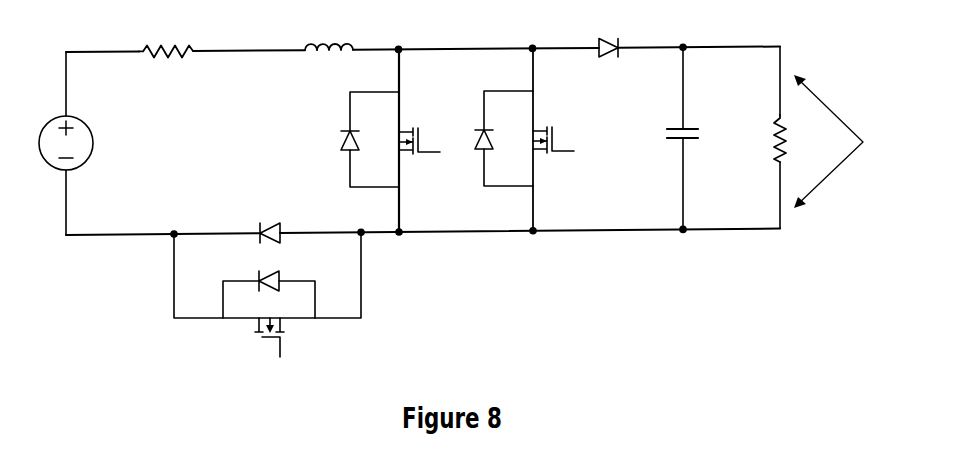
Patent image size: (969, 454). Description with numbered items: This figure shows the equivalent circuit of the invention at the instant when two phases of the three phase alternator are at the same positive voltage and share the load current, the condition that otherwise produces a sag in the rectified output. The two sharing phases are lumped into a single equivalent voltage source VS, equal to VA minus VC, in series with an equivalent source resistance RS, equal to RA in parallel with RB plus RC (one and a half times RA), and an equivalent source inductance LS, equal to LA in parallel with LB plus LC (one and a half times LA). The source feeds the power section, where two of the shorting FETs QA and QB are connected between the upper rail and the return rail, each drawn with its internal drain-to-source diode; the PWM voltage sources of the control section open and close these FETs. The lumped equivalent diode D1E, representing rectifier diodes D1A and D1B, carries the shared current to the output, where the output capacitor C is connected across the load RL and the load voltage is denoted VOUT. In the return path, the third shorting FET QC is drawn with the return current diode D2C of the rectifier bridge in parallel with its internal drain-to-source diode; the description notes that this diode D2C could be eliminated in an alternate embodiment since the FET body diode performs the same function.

The equivalent source voltage VS is at (82, 143).
The equivalent source resistance RS is at (166, 36).
The equivalent source inductance LS is at (329, 32).
The shorting FET QA is at (395, 141).
The shorting FET QB is at (528, 140).
The lumped equivalent diode D1E is at (617, 34).
The output capacitor C is at (693, 138).
The load RL is at (795, 138).
The output voltage VOUT is at (855, 141).
The return current diode D2C is at (274, 218).
The shorting FET QC is at (267, 296).